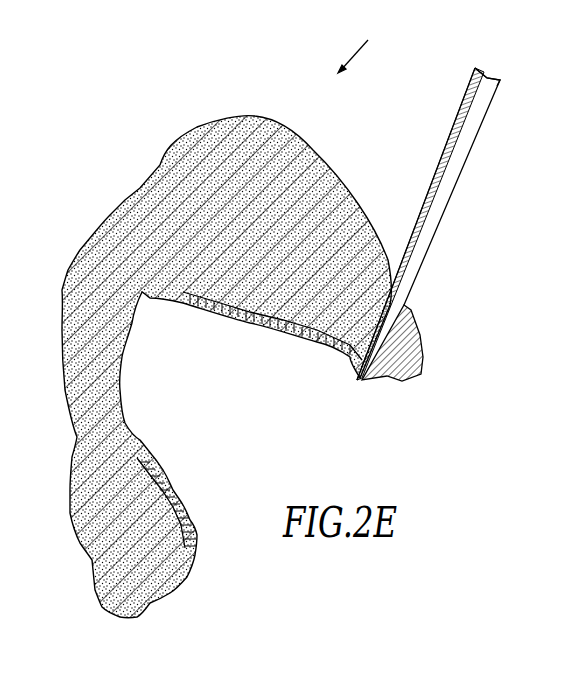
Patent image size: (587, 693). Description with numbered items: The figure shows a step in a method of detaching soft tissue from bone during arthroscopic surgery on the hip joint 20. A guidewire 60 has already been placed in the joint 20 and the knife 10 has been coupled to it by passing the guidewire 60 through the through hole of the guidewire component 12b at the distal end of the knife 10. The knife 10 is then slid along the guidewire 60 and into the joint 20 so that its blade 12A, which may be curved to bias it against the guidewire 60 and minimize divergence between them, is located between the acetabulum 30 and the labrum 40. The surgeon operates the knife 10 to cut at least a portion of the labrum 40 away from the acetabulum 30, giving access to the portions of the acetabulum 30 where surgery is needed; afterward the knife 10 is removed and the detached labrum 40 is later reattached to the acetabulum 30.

The knife 10 is at (428, 225).
The blade 12A is at (372, 367).
The guidewire component 12b is at (445, 158).
The hip joint 20 is at (368, 40).
The acetabulum 30 is at (335, 165).
The labrum 40 is at (422, 333).
The guidewire 60 is at (475, 68).